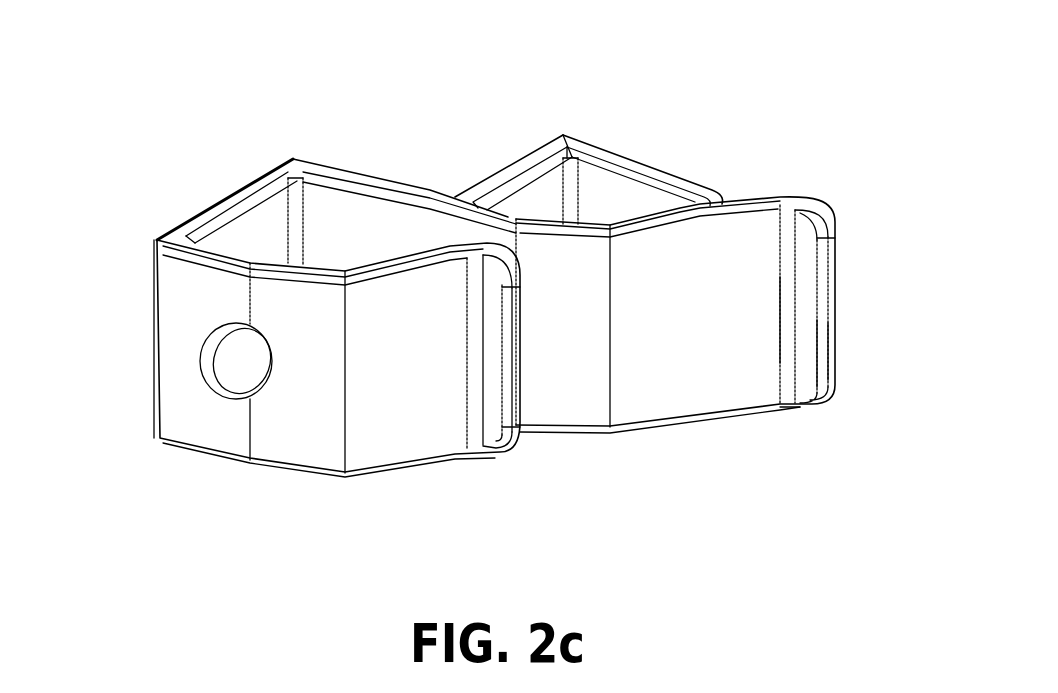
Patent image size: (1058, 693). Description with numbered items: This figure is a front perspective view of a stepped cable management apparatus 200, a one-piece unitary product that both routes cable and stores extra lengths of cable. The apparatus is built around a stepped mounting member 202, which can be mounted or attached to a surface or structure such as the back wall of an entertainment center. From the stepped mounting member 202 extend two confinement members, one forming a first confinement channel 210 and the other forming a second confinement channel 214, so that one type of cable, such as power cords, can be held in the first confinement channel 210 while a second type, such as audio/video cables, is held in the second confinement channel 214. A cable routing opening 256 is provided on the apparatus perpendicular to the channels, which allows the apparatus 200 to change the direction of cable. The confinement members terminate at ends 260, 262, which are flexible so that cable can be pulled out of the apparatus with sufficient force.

The stepped cable management apparatus 200 is at (505, 355).
The stepped mounting member 202 is at (527, 158).
The first confinement channel 210 is at (290, 285).
The second confinement channel 214 is at (702, 250).
The cable routing opening 256 is at (203, 353).
The end 260 is at (502, 352).
The end 262 is at (800, 213).